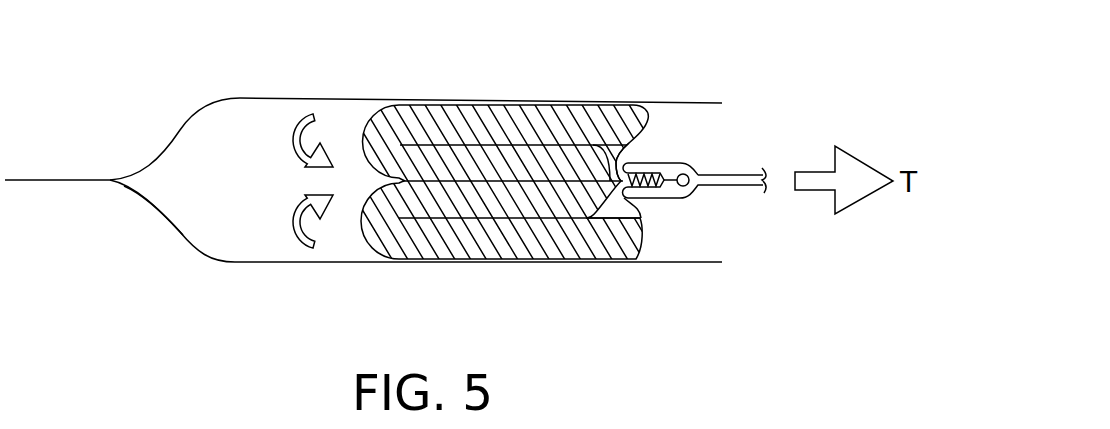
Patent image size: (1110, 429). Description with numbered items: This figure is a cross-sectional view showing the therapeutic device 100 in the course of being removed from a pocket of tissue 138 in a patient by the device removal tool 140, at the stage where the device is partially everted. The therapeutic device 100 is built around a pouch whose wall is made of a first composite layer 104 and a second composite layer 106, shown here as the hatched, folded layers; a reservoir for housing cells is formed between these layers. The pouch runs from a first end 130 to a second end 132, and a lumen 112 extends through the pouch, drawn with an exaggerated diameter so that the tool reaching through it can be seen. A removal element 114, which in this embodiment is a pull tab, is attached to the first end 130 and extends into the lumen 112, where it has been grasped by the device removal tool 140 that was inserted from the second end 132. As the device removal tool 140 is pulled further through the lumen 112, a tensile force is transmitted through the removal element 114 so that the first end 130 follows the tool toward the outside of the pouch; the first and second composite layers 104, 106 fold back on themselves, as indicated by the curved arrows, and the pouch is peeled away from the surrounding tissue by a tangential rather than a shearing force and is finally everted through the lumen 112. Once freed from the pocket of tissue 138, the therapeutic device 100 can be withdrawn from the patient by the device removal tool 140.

The therapeutic device 100 is at (370, 82).
The first composite layer 104 is at (465, 105).
The second composite layer 106 is at (508, 145).
The lumen 112 is at (602, 160).
The removal element 114 is at (626, 163).
The first end 130 is at (597, 202).
The second end 132 is at (640, 244).
The pocket of tissue 138 is at (177, 127).
The device removal tool 140 is at (744, 173).